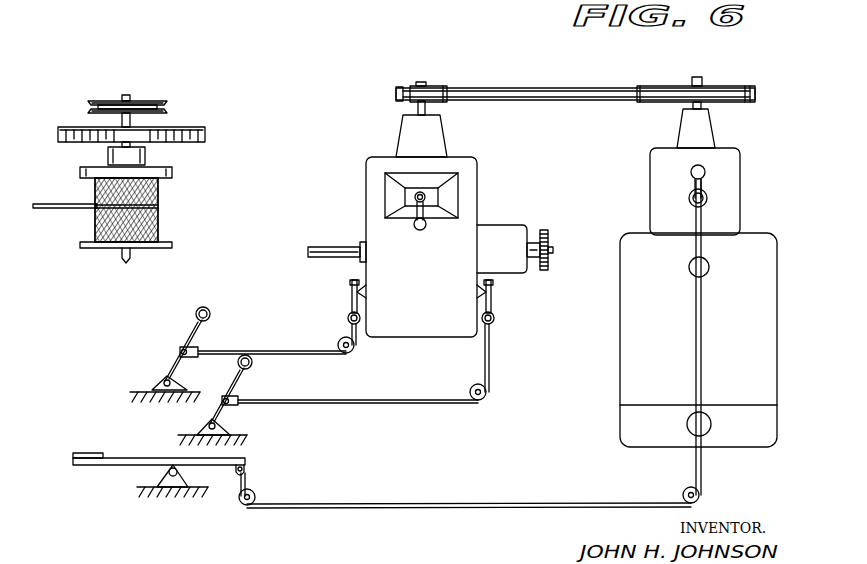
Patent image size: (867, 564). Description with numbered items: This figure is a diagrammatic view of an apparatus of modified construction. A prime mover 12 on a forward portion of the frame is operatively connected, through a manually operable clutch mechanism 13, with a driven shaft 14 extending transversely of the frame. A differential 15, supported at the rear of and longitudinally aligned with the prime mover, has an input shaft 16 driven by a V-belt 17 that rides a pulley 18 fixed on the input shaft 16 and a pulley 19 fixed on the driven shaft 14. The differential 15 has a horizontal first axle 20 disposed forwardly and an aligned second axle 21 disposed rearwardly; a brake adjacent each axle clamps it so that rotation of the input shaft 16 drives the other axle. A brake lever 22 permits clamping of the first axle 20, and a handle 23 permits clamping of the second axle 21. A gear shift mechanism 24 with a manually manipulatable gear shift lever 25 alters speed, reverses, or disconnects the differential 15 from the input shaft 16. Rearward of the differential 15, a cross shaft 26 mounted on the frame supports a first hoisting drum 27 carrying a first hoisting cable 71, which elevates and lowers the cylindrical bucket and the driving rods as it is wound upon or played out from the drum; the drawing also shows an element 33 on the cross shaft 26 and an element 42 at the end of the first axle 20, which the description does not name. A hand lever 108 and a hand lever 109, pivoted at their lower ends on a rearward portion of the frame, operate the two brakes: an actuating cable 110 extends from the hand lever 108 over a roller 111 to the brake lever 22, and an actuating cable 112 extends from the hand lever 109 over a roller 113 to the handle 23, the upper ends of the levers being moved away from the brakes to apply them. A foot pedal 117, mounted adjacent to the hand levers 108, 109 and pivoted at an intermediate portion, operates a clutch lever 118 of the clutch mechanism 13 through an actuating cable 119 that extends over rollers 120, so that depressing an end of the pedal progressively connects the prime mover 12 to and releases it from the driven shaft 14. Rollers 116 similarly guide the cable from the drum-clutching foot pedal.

The prime mover 12 is at (640, 383).
The clutch mechanism 13 is at (725, 185).
The driven shaft 14 is at (703, 105).
The differential 15 is at (445, 309).
The input shaft 16 is at (410, 107).
The V-belt 17 is at (558, 89).
The pulley 18 is at (437, 87).
The pulley 19 is at (727, 87).
The first axle 20 is at (553, 251).
The second axle 21 is at (332, 247).
The brake lever 22 is at (492, 306).
The handle 23 is at (350, 305).
The gear shift mechanism 24 is at (392, 194).
The gear shift lever 25 is at (418, 231).
The cross shaft 26 is at (140, 125).
The first hoisting drum 27 is at (172, 174).
The pulley 33 is at (152, 101).
The knurled knob 42 is at (545, 230).
The first hoisting cable 71 is at (75, 209).
The hand lever 108 is at (236, 381).
The hand lever 109 is at (184, 334).
The actuating cable 110 is at (337, 404).
The roller 111 is at (485, 399).
The actuating cable 112 is at (272, 350).
The roller 113 is at (352, 351).
The rollers 116 is at (238, 3).
The foot pedal 117 is at (120, 458).
The clutch lever 118 is at (690, 172).
The actuating cable 119 is at (452, 507).
The rollers 120 is at (700, 498).